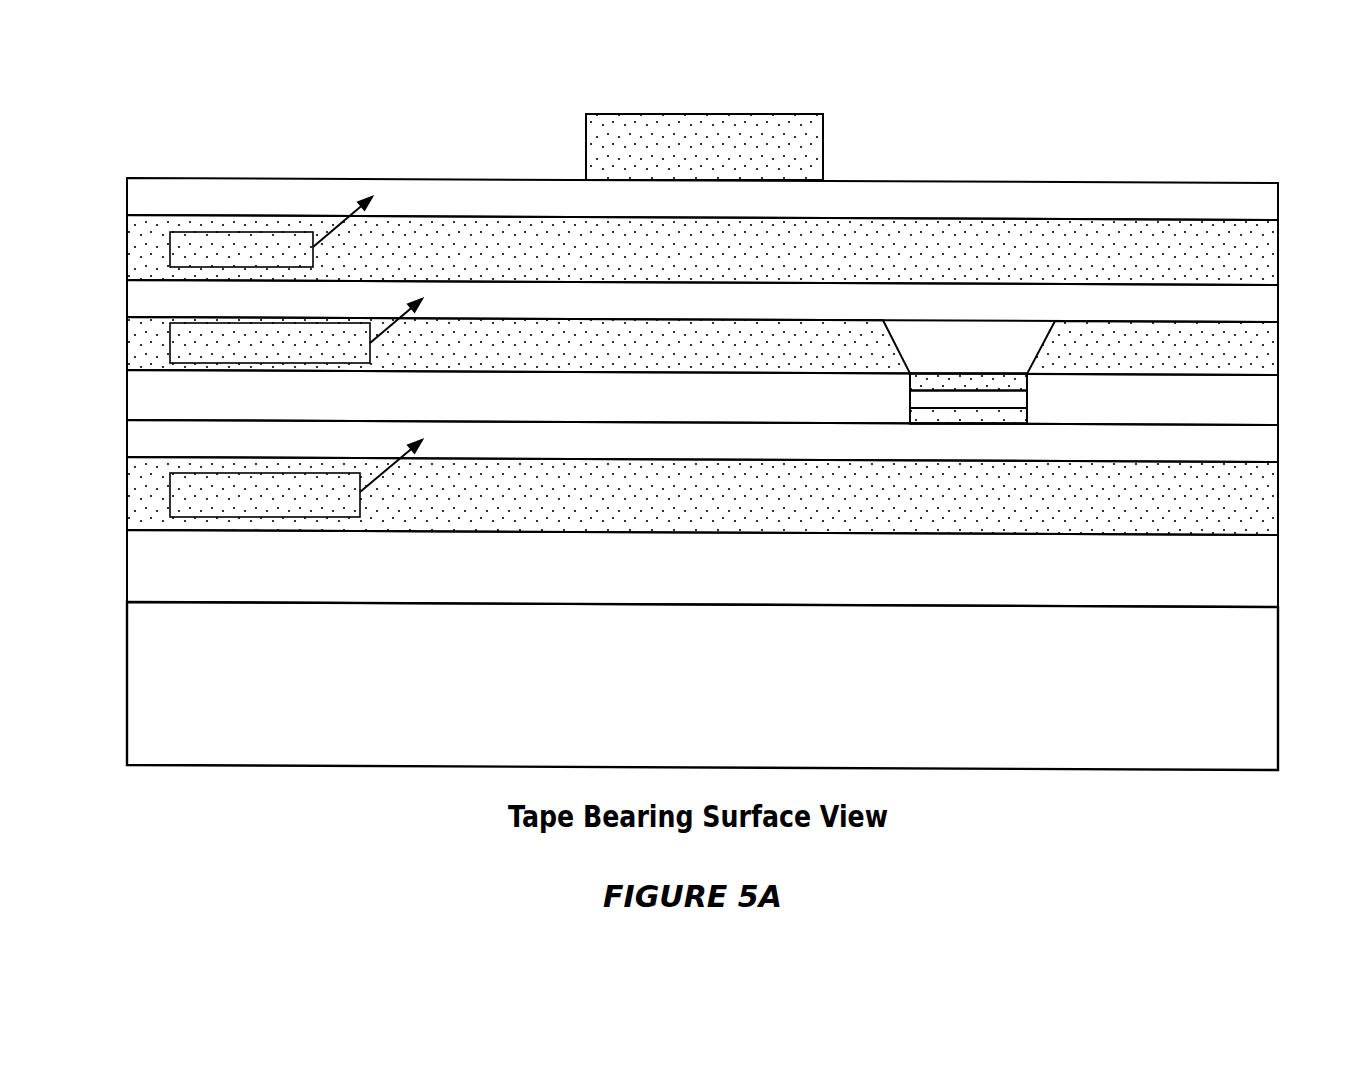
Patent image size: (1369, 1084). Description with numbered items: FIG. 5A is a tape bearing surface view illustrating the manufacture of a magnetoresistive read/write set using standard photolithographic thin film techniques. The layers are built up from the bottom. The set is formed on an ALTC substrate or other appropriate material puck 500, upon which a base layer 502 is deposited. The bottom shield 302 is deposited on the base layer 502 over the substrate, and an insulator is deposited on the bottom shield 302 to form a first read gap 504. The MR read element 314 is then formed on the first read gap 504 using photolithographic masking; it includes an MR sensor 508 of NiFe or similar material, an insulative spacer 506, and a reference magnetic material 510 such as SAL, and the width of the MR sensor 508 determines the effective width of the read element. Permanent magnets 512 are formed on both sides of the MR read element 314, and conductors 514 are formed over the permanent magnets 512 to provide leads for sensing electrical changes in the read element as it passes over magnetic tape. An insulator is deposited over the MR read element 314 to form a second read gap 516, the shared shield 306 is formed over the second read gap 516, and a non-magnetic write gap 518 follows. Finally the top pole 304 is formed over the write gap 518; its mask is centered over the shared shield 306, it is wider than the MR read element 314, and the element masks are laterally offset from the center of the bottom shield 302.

The top pole 304 is at (663, 113).
The write gap 518 is at (141, 200).
The shared shield 306 is at (1267, 255).
The second read gap 516 is at (141, 305).
The conductors 514 is at (141, 345).
The permanent magnets 512 is at (141, 398).
The MR read element 314 is at (968, 372).
The MR sensor 508 is at (920, 382).
The insulative spacer 506 is at (1017, 405).
The reference magnetic material 510 is at (943, 417).
The first read gap 504 is at (141, 443).
The bottom shield 302 is at (1265, 495).
The base layer 502 is at (1262, 573).
The puck 500 is at (1260, 692).